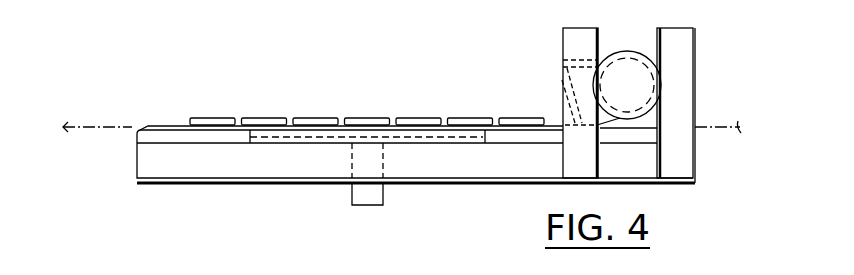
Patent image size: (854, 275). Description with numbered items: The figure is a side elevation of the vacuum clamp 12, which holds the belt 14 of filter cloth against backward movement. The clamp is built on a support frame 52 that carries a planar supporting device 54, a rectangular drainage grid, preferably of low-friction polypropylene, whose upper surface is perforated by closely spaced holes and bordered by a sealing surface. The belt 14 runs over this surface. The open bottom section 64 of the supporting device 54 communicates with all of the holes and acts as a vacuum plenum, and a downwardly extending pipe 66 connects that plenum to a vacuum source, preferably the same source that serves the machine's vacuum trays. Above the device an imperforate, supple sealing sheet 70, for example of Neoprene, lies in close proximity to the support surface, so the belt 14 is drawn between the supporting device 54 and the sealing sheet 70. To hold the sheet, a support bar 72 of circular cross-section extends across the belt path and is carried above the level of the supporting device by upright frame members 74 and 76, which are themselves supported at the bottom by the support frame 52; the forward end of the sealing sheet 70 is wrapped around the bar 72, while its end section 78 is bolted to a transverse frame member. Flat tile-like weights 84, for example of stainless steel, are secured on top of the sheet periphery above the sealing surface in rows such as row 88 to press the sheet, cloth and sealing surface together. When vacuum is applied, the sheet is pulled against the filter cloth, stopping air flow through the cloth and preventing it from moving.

The vacuum clamp 12 is at (421, 86).
The belt 14 is at (109, 127).
The support frame 52 is at (177, 168).
The planar supporting device 54 is at (462, 138).
The bottom section 64 is at (412, 142).
The downwardly extending pipe 66 is at (352, 200).
The imperforate sealing sheet 70 is at (563, 92).
The support bar 72 is at (637, 72).
The upright frame member 74 is at (583, 35).
The upright frame member 76 is at (685, 55).
The end section 78 is at (563, 72).
The weights 84 is at (508, 118).
The row 88 is at (322, 117).